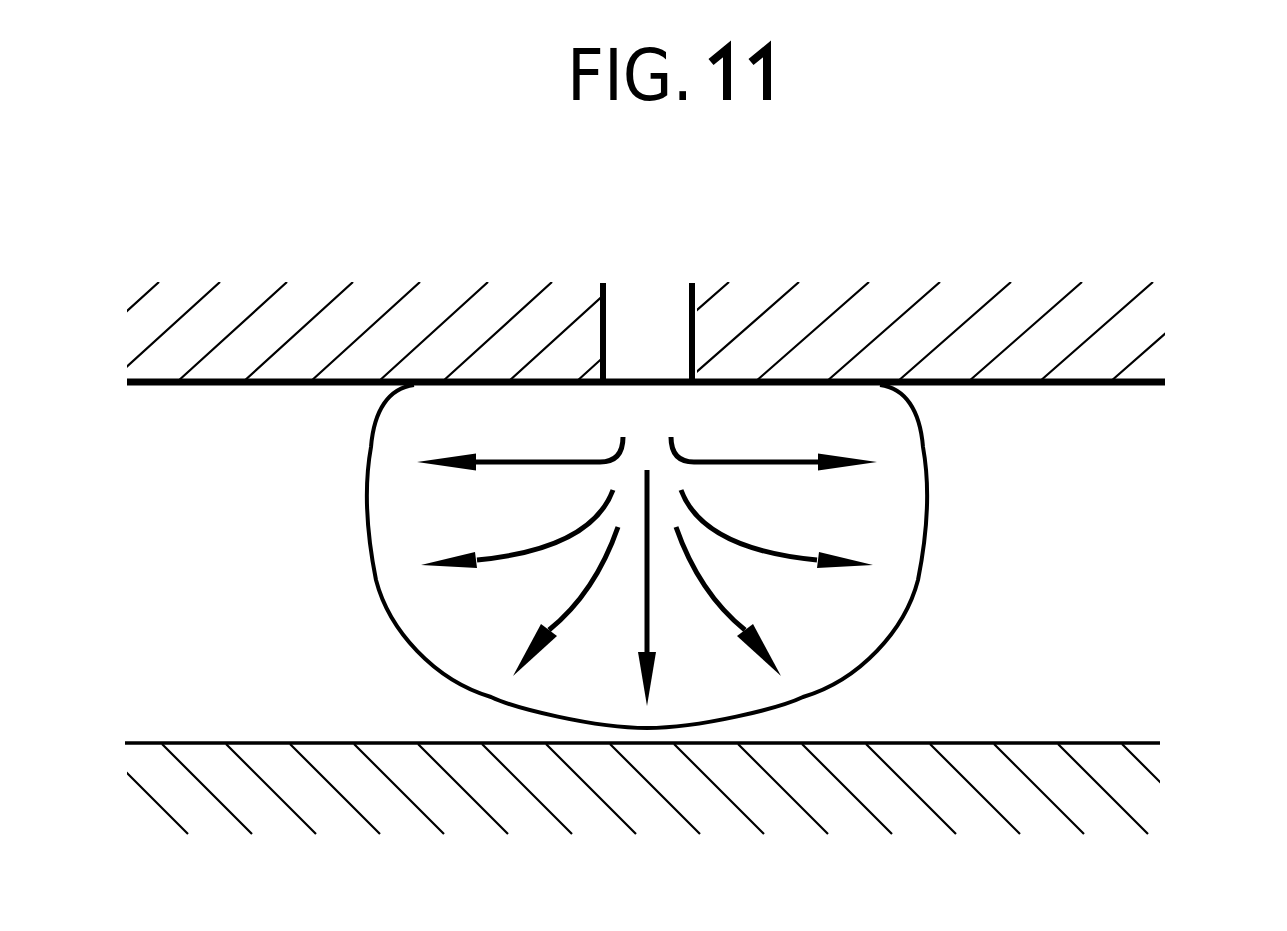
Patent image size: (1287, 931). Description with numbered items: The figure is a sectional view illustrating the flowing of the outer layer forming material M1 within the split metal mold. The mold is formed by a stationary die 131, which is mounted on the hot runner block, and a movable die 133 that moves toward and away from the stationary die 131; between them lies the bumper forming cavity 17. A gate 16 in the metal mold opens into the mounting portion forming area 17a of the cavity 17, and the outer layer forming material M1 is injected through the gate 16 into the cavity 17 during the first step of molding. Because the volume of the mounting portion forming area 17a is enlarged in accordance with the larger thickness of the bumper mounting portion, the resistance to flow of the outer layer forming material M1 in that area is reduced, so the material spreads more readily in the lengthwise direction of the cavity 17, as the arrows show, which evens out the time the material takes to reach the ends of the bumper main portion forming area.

The stationary die 131 is at (1137, 322).
The movable die 133 is at (1127, 797).
The gate 16 is at (606, 300).
The bumper forming cavity 17 is at (1102, 594).
The mounting portion forming area 17a is at (1077, 386).
The outer layer forming material M1 is at (570, 702).